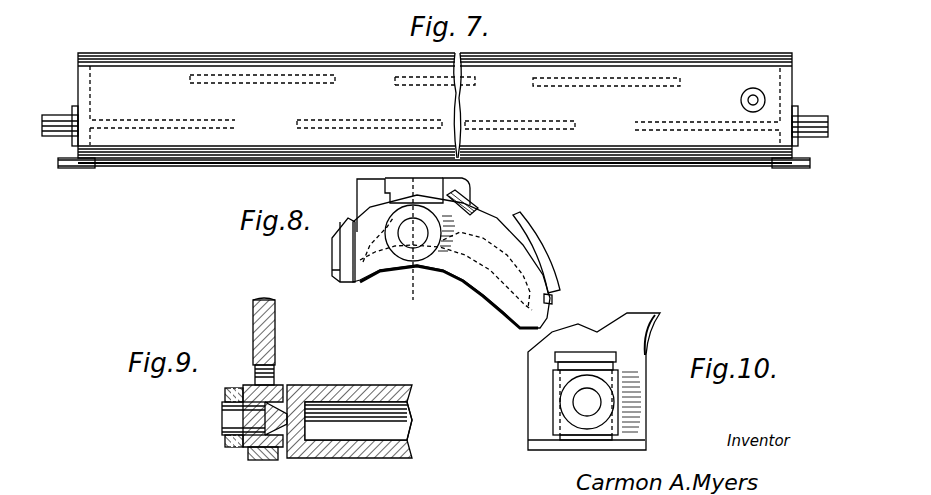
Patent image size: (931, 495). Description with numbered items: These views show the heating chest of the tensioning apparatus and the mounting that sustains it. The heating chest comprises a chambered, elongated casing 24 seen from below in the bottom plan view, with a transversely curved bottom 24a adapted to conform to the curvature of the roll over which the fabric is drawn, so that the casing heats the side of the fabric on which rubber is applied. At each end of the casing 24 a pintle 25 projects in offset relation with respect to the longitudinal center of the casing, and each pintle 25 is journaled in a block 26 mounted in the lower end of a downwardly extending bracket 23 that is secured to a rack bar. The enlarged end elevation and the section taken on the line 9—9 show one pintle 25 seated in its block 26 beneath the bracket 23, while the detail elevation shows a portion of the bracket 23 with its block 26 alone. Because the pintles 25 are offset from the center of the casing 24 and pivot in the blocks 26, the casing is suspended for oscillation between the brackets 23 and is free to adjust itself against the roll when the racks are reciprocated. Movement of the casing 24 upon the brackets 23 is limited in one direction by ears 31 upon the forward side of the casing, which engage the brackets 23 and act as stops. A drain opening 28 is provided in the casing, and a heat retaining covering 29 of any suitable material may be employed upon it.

In FIG. 8, the section line 9 is at (417, 251).
In FIG. 8, the bracket 23 is at (380, 286).
In FIG. 9, the bracket 23 is at (276, 318).
In FIG. 10, the bracket 23 is at (662, 318).
In FIG. 7, the casing 24 is at (435, 105).
In FIG. 9, the casing 24 is at (358, 378).
In FIG. 8, the curved bottom 24a is at (484, 297).
In FIG. 7, the pintle 25 is at (62, 118).
In FIG. 8, the pintle 25 is at (428, 238).
In FIG. 9, the pintle 25 is at (222, 421).
In FIG. 10, the pintle 25 is at (575, 400).
In FIG. 9, the block 26 is at (251, 457).
In FIG. 10, the block 26 is at (553, 412).
In FIG. 8, the drain opening 28 is at (553, 300).
In FIG. 8, the heat retaining covering 29 is at (557, 247).
In FIG. 7, the ear 31 is at (80, 169).
In FIG. 8, the ear 31 is at (332, 253).